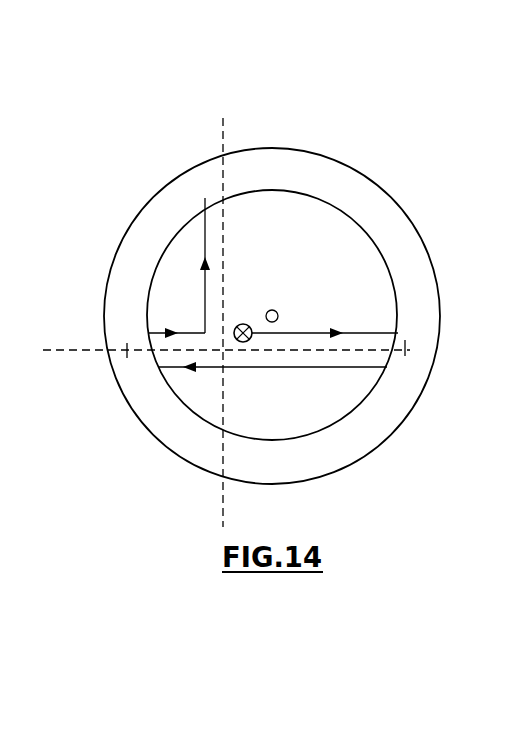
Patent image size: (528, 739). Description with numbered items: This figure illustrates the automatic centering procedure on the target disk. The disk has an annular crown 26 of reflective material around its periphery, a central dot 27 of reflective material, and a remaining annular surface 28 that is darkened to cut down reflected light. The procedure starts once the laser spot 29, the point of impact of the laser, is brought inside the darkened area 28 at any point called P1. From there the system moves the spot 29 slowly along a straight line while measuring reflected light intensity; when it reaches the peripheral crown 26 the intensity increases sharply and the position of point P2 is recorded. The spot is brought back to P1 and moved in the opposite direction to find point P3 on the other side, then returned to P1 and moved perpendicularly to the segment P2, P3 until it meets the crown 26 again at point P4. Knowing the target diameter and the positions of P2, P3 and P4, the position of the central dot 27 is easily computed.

The annular crown 26 is at (152, 432).
The central dot 27 is at (277, 311).
The darkened annular surface 28 is at (278, 207).
The laser spot 29 is at (247, 324).
The starting point P1 is at (243, 343).
The first crown point P2 is at (441, 337).
The second crown point P3 is at (83, 340).
The third crown point P4 is at (192, 237).